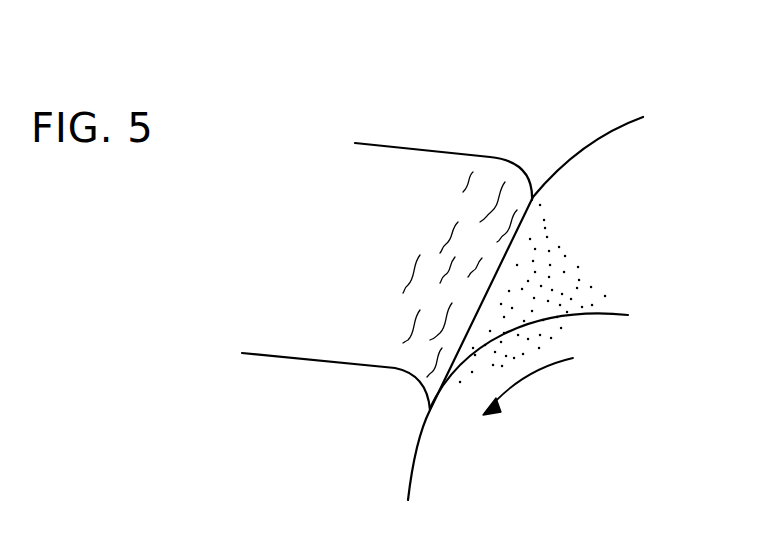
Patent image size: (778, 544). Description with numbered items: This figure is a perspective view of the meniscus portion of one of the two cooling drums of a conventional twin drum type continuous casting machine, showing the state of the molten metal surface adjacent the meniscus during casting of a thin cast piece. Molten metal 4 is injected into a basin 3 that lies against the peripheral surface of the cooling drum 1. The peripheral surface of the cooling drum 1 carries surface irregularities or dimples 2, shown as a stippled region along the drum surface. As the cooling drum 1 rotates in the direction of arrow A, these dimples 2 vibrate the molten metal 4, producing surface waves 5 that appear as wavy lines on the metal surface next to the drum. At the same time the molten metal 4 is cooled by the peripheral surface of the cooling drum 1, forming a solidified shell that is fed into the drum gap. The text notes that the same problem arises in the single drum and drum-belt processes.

The cooling drum 1 is at (546, 468).
The dimples 2 is at (563, 252).
The basin 3 is at (392, 144).
The molten metal 4 is at (428, 168).
The surface waves 5 is at (422, 312).